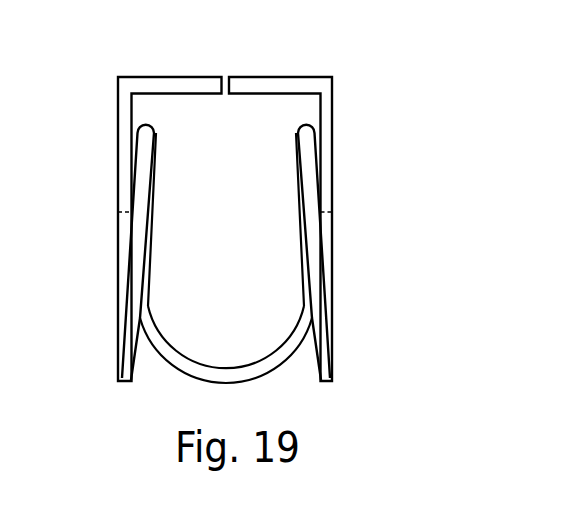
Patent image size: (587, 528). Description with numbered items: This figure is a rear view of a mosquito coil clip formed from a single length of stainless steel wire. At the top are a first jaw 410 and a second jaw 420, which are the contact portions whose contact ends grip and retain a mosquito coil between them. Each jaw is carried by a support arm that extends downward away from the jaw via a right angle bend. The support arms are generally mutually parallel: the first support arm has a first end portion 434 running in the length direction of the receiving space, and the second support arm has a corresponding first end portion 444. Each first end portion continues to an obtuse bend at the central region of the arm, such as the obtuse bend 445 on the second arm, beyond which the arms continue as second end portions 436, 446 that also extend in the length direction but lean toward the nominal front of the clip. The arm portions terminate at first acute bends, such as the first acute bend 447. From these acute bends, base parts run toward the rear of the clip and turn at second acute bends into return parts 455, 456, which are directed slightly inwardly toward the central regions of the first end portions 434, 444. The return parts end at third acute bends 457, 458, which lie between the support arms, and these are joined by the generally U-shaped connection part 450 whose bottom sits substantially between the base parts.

The first jaw 410 is at (273, 85).
The second jaw 420 is at (176, 85).
The first end portion of first support arm 434 is at (327, 155).
The second end portion of first support arm 436 is at (328, 263).
The first end portion of second support arm 444 is at (118, 152).
The obtuse bend 445 is at (66, 68).
The second end portion of second support arm 446 is at (120, 245).
The first acute bend 447 is at (66, 178).
The connection part 450 is at (182, 363).
The return part 455 is at (300, 230).
The return part 456 is at (133, 265).
The third acute bend 457 is at (301, 132).
The third acute bend 458 is at (150, 128).